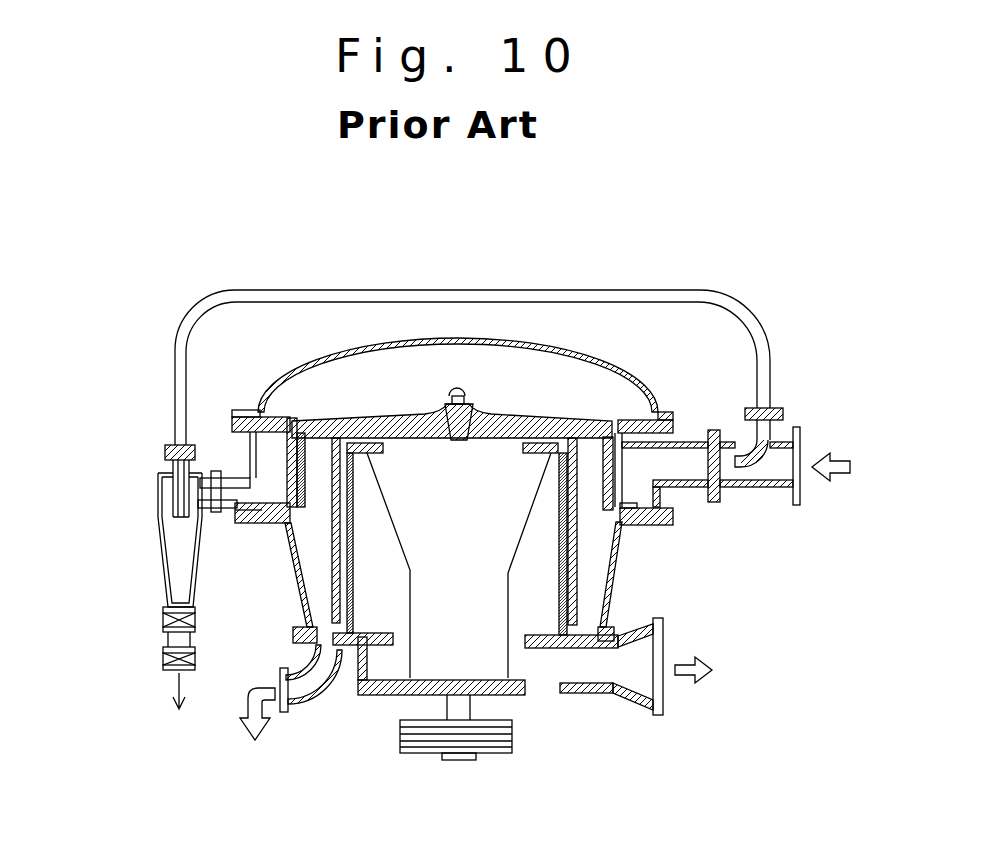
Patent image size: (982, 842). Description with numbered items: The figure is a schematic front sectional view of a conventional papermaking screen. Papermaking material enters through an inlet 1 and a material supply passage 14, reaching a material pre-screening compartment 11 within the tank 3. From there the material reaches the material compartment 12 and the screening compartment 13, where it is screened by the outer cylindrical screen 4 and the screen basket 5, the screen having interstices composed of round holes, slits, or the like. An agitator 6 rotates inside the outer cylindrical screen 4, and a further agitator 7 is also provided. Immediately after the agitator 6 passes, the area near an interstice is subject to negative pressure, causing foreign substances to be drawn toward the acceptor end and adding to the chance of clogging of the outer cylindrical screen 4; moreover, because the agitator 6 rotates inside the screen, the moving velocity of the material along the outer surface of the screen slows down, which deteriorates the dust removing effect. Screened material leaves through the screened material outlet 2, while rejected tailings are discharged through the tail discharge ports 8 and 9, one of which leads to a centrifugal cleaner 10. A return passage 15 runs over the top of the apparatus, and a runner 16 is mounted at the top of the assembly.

The inlet 1 is at (678, 463).
The screened material outlet 2 is at (638, 677).
The tank 3 is at (618, 565).
The outer cylindrical screen 4 is at (285, 460).
The screen basket 5 is at (557, 510).
The agitator 6 is at (307, 435).
The agitator 7 is at (332, 589).
The tail discharge port 8 is at (230, 495).
The tail discharge port 9 is at (302, 692).
The centrifugal cleaner 10 is at (160, 555).
The material pre-screening compartment 11 is at (635, 480).
The material compartment 12 is at (530, 595).
The screening compartment 13 is at (595, 530).
The material supply passage 14 is at (775, 468).
The return passage 15 is at (540, 290).
The runner 16 is at (417, 420).